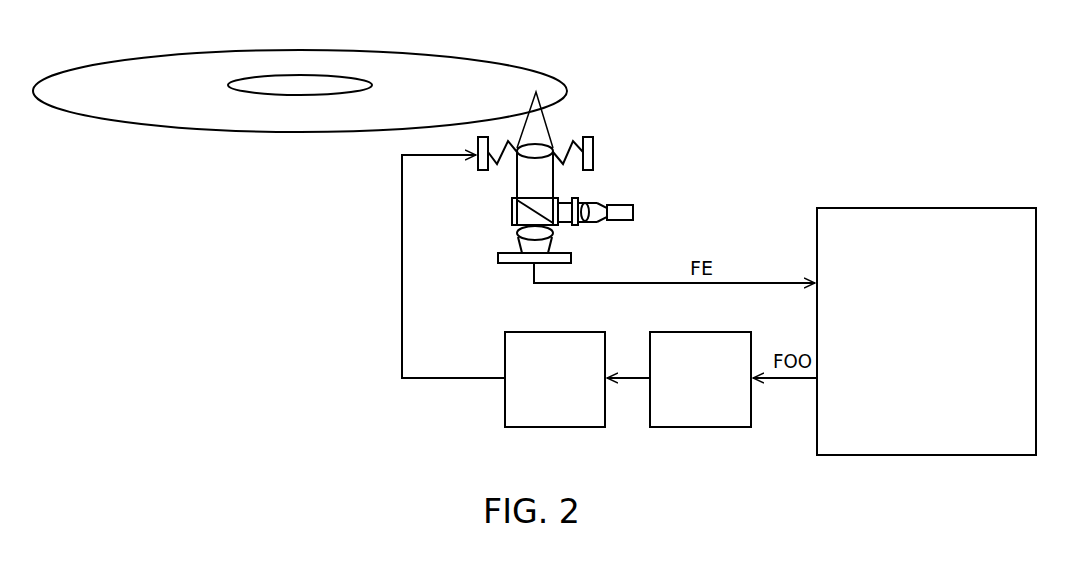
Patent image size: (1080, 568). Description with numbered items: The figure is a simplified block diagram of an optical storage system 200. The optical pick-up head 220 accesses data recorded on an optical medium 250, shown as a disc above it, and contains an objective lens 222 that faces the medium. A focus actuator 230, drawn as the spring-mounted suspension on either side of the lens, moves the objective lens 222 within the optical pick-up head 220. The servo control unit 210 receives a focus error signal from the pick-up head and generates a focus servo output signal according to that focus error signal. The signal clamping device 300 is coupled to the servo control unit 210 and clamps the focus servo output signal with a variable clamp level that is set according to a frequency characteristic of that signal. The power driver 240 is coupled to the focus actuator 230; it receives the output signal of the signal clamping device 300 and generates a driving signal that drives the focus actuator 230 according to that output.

The optical storage system 200 is at (796, 55).
The servo control unit 210 is at (1010, 208).
The optical pick-up head 220 is at (572, 177).
The objective lens 222 is at (543, 143).
The focus actuator 230 is at (481, 171).
The power driver 240 is at (578, 332).
The optical medium 250 is at (468, 58).
The signal clamping device 300 is at (718, 332).